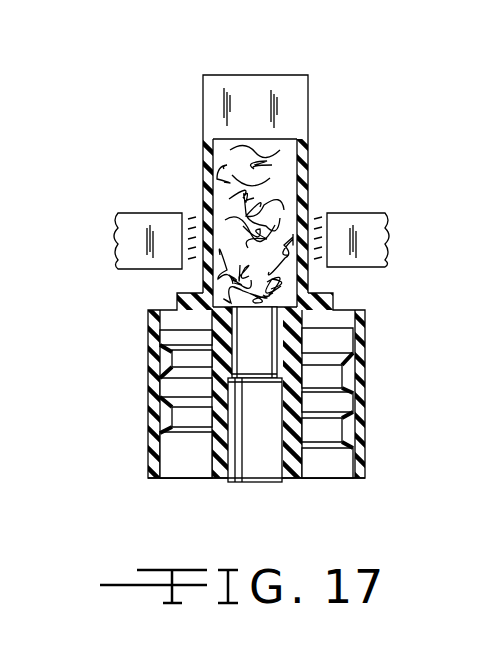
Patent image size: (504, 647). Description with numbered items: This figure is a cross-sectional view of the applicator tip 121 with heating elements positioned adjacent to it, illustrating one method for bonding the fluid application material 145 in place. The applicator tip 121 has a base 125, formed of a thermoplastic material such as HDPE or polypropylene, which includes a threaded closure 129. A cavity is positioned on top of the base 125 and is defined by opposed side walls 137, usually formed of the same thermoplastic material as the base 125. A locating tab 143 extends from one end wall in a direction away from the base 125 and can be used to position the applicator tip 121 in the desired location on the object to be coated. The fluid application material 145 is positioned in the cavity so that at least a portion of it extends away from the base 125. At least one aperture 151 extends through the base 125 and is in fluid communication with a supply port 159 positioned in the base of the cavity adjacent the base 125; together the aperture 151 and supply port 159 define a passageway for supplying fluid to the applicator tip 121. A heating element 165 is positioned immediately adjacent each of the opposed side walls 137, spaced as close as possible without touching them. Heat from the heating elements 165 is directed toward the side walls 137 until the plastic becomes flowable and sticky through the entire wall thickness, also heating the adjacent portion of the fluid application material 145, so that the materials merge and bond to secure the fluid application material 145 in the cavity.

The applicator tip 121 is at (172, 131).
The locating tab 143 is at (305, 76).
The fluid application material 145 is at (300, 140).
The side walls 137 is at (203, 190).
The heating element 165 is at (140, 269).
The supply port 159 is at (300, 308).
The base 125 is at (365, 405).
The aperture 151 is at (255, 470).
The threaded closure 129 is at (323, 478).